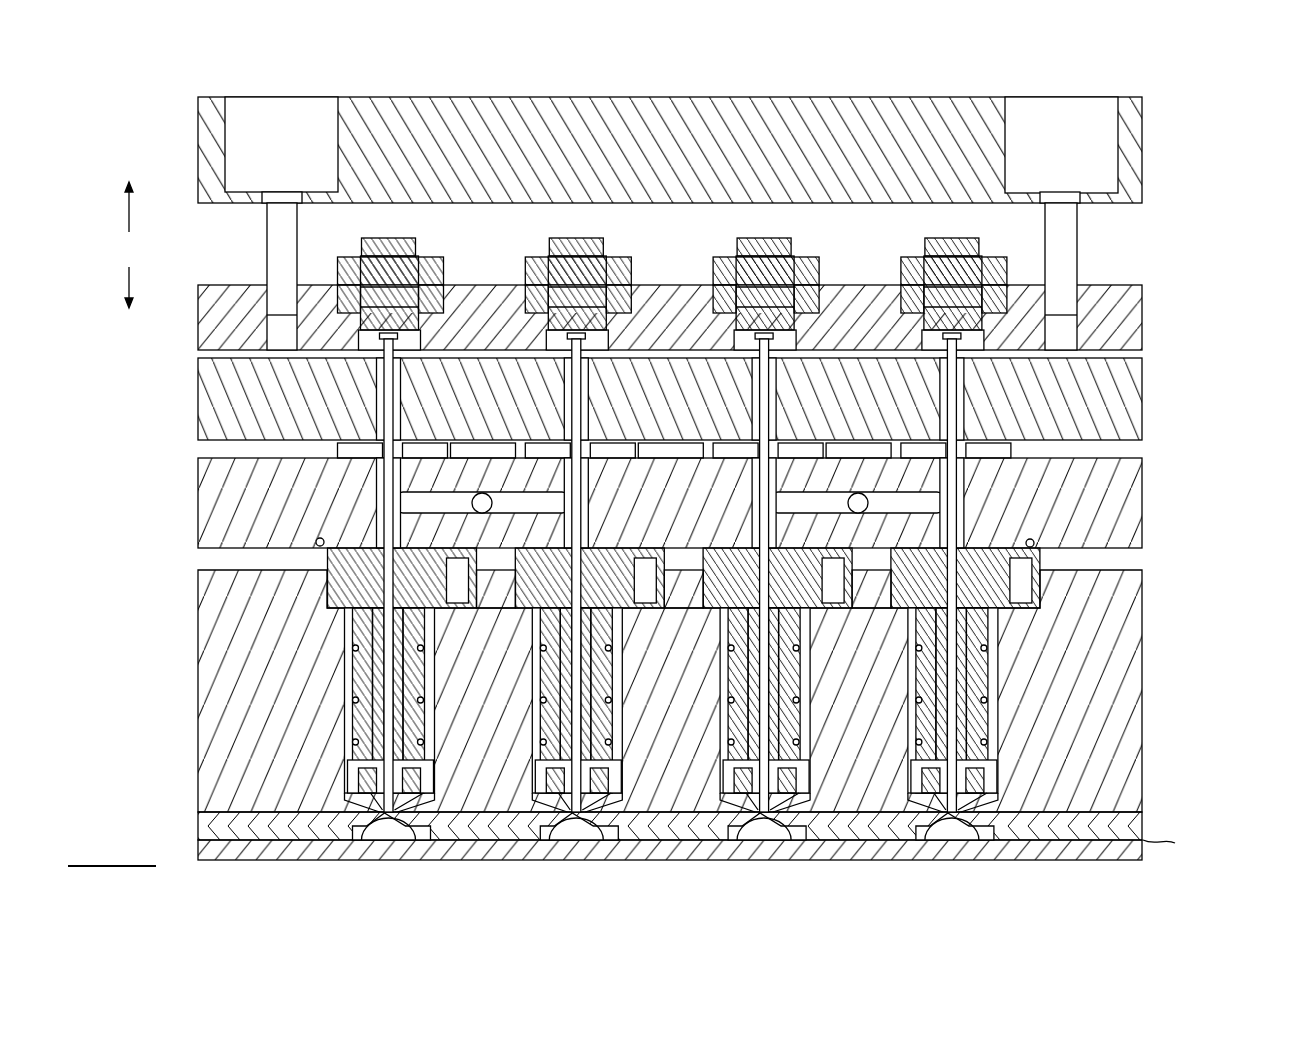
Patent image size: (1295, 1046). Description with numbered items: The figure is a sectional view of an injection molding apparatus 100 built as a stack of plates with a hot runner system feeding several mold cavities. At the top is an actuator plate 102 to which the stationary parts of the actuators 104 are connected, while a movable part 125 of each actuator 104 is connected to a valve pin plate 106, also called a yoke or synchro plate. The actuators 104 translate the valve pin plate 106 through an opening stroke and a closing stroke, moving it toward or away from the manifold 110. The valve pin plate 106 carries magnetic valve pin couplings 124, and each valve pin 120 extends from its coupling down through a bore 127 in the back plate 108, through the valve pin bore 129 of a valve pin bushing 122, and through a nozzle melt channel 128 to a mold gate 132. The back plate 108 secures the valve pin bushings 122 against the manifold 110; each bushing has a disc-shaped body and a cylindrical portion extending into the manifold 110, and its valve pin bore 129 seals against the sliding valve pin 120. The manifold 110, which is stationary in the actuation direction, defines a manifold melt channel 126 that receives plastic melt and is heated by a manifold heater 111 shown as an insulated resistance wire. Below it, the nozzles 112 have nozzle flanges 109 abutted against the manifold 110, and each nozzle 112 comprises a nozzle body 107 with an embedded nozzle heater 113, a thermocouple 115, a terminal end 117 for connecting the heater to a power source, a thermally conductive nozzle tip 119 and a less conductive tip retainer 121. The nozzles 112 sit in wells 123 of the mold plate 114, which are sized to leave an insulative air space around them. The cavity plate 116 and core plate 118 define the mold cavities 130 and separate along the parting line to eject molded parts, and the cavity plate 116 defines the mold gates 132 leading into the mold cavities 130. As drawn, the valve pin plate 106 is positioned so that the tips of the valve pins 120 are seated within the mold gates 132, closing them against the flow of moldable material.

The injection molding apparatus 100 is at (1157, 70).
The actuator plate 102 is at (1143, 130).
The actuators 104 is at (1062, 97).
The valve pin plate 106 is at (1143, 308).
The nozzle body 107 is at (281, 695).
The back plate 108 is at (1143, 395).
The nozzle flange 109 is at (330, 560).
The manifold 110 is at (1143, 488).
The manifold heater 111 is at (318, 540).
The nozzles 112 is at (988, 690).
The nozzle heater 113 is at (357, 705).
The mold plate 114 is at (1143, 735).
The thermocouple 115 is at (436, 778).
The cavity plate 116 is at (1143, 797).
The terminal end 117 is at (458, 592).
The core plate 118 is at (1143, 856).
The nozzle tip 119 is at (357, 746).
The valve pins 120 is at (988, 632).
The tip retainer 121 is at (360, 787).
The valve pin bushings 122 is at (1020, 449).
The wells 123 is at (357, 667).
The magnetic valve pin couplings 124 is at (1008, 258).
The movable part 125 is at (1068, 216).
The manifold melt channel 126 is at (925, 503).
The bores 127 is at (378, 407).
The nozzle melt channel 128 is at (962, 580).
The valve pin bore 129 is at (392, 483).
The mold cavities 130 is at (949, 828).
The mold gates 132 is at (386, 813).